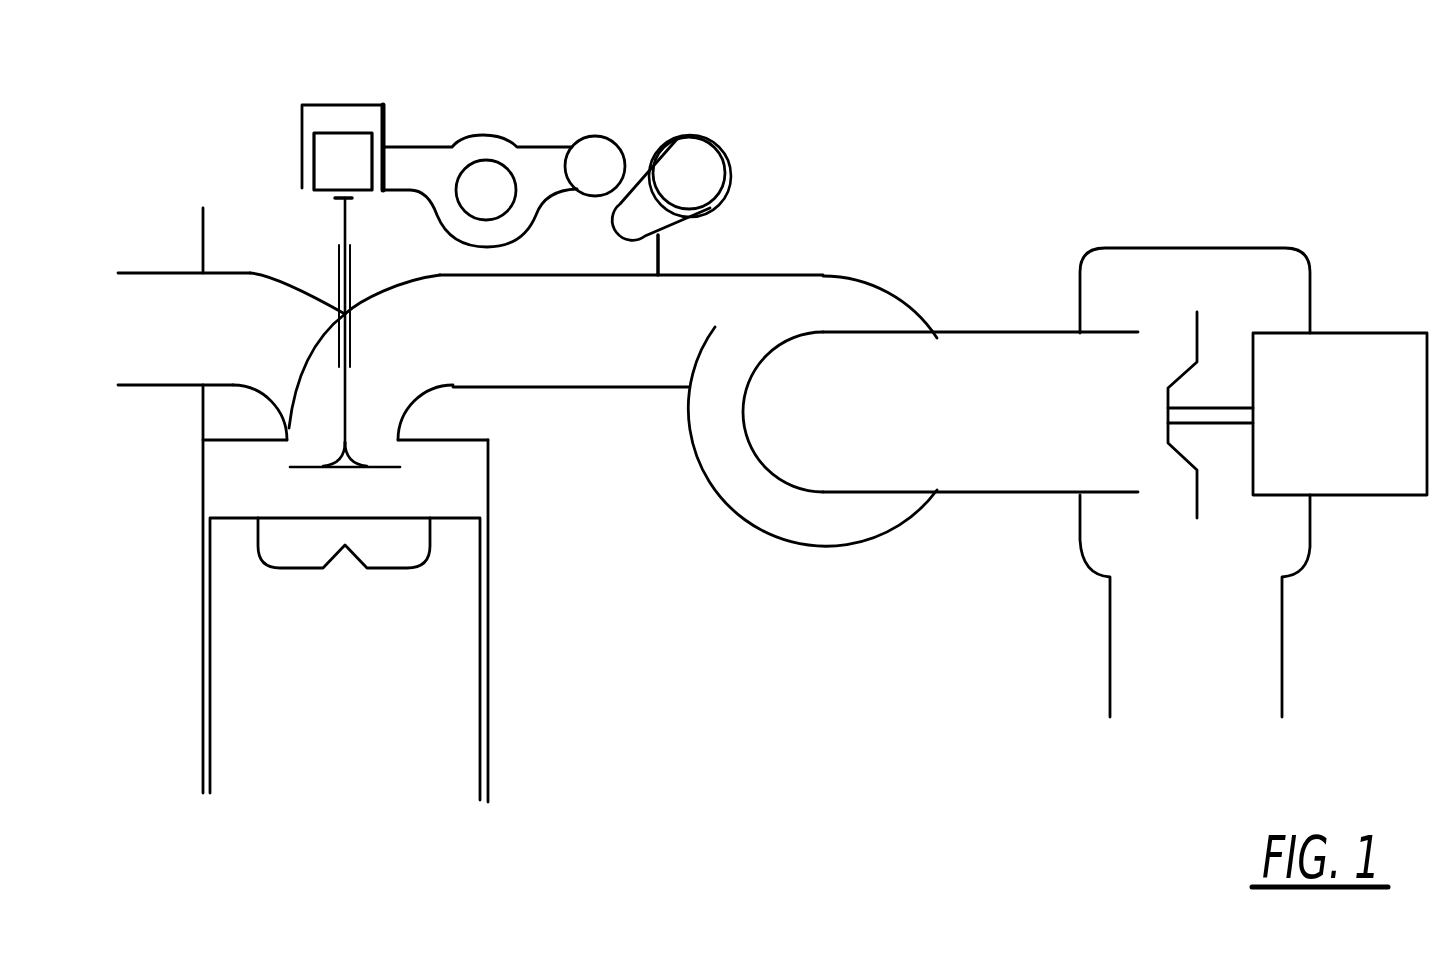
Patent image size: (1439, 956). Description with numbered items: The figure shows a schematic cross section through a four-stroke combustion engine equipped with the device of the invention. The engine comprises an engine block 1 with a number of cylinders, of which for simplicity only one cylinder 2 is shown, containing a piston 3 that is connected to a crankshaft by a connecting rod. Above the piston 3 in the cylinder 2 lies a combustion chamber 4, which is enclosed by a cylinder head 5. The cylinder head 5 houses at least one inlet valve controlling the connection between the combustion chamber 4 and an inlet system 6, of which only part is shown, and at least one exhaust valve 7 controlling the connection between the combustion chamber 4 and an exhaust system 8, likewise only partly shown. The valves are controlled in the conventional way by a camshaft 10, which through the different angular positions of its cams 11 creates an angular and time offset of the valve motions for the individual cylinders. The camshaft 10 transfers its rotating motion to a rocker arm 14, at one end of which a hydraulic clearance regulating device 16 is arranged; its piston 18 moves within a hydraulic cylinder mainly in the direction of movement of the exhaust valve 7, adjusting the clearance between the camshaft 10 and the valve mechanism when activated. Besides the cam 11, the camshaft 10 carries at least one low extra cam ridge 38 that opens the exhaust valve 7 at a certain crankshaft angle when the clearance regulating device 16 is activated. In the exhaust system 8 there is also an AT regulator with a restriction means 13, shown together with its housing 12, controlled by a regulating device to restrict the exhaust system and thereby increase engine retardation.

The engine block 1 is at (510, 708).
The cylinder 2 is at (490, 568).
The piston 3 is at (453, 518).
The combustion chamber 4 is at (237, 467).
The cylinder head 5 is at (253, 440).
The inlet system 6 is at (160, 258).
The exhaust valve 7 is at (340, 458).
The exhaust system 8 is at (833, 257).
The camshaft 10 is at (700, 172).
The cam 11 is at (635, 203).
The valve housing 12 is at (1325, 262).
The restriction means 13 is at (1188, 363).
The rocker arm 14 is at (455, 125).
The clearance regulating device 16 is at (388, 95).
The piston 18 is at (327, 160).
The extra cam ridge 38 is at (688, 135).